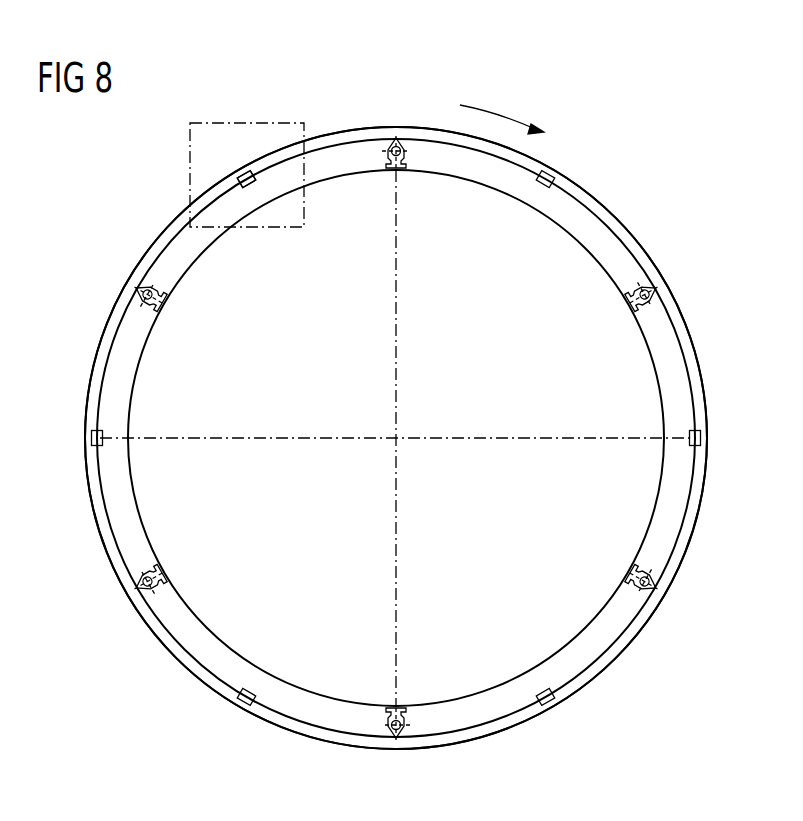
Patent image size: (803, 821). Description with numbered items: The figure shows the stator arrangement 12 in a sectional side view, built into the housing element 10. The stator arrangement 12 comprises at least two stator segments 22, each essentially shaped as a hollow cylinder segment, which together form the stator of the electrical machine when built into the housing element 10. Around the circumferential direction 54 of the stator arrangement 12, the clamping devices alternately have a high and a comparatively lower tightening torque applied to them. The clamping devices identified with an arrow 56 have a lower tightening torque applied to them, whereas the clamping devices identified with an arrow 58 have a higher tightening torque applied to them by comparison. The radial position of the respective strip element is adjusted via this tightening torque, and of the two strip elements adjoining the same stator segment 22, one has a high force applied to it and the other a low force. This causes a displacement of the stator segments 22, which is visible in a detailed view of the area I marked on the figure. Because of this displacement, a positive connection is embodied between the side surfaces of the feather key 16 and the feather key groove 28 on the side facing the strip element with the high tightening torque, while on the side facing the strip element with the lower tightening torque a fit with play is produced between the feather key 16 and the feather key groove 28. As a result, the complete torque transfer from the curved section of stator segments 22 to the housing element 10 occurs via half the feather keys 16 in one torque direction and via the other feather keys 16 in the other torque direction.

The housing element 10 is at (598, 207).
The stator arrangement 12 is at (164, 189).
The feather key 16 is at (244, 172).
The stator segment 22 is at (485, 175).
The feather key groove 28 is at (255, 186).
The circumferential direction 54 is at (499, 113).
The arrow 56 is at (397, 529).
The arrow 58 is at (394, 344).
The area I is at (190, 172).